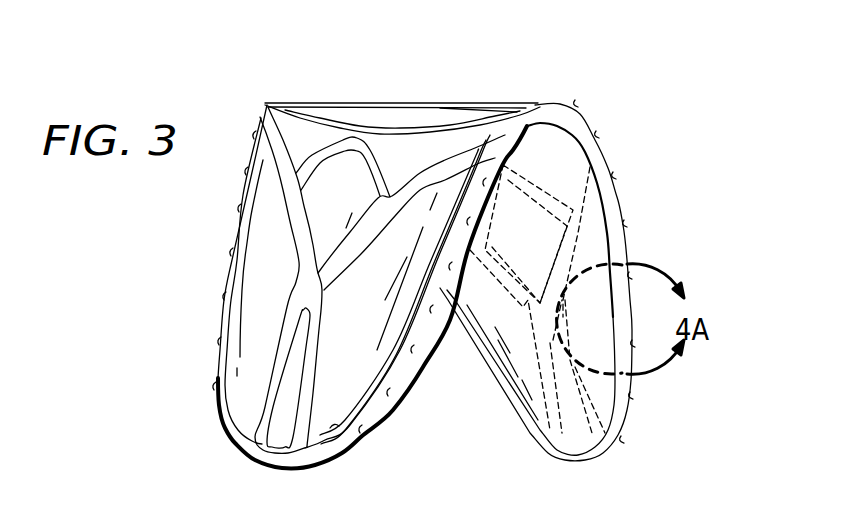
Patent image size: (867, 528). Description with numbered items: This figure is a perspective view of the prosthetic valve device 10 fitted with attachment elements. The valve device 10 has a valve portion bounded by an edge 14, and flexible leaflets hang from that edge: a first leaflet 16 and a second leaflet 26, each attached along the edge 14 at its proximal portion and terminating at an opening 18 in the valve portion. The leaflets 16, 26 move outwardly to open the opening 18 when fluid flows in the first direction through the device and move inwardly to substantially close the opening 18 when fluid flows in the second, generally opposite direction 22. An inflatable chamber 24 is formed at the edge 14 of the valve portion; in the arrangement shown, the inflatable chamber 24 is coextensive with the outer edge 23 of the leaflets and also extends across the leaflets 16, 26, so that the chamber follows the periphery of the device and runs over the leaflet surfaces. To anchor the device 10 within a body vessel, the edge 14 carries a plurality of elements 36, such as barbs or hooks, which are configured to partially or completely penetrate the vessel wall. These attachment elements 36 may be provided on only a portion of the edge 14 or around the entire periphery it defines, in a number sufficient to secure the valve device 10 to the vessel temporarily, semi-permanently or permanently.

The prosthetic valve device 10 is at (670, 166).
The edge 14 is at (226, 262).
The leaflet 16 is at (580, 435).
The opening 18 is at (459, 124).
The second direction 22 is at (350, 92).
The outer edge 23 is at (346, 423).
The inflatable chamber 24 is at (268, 457).
The second leaflet 26 is at (250, 380).
The elements 36 is at (620, 243).